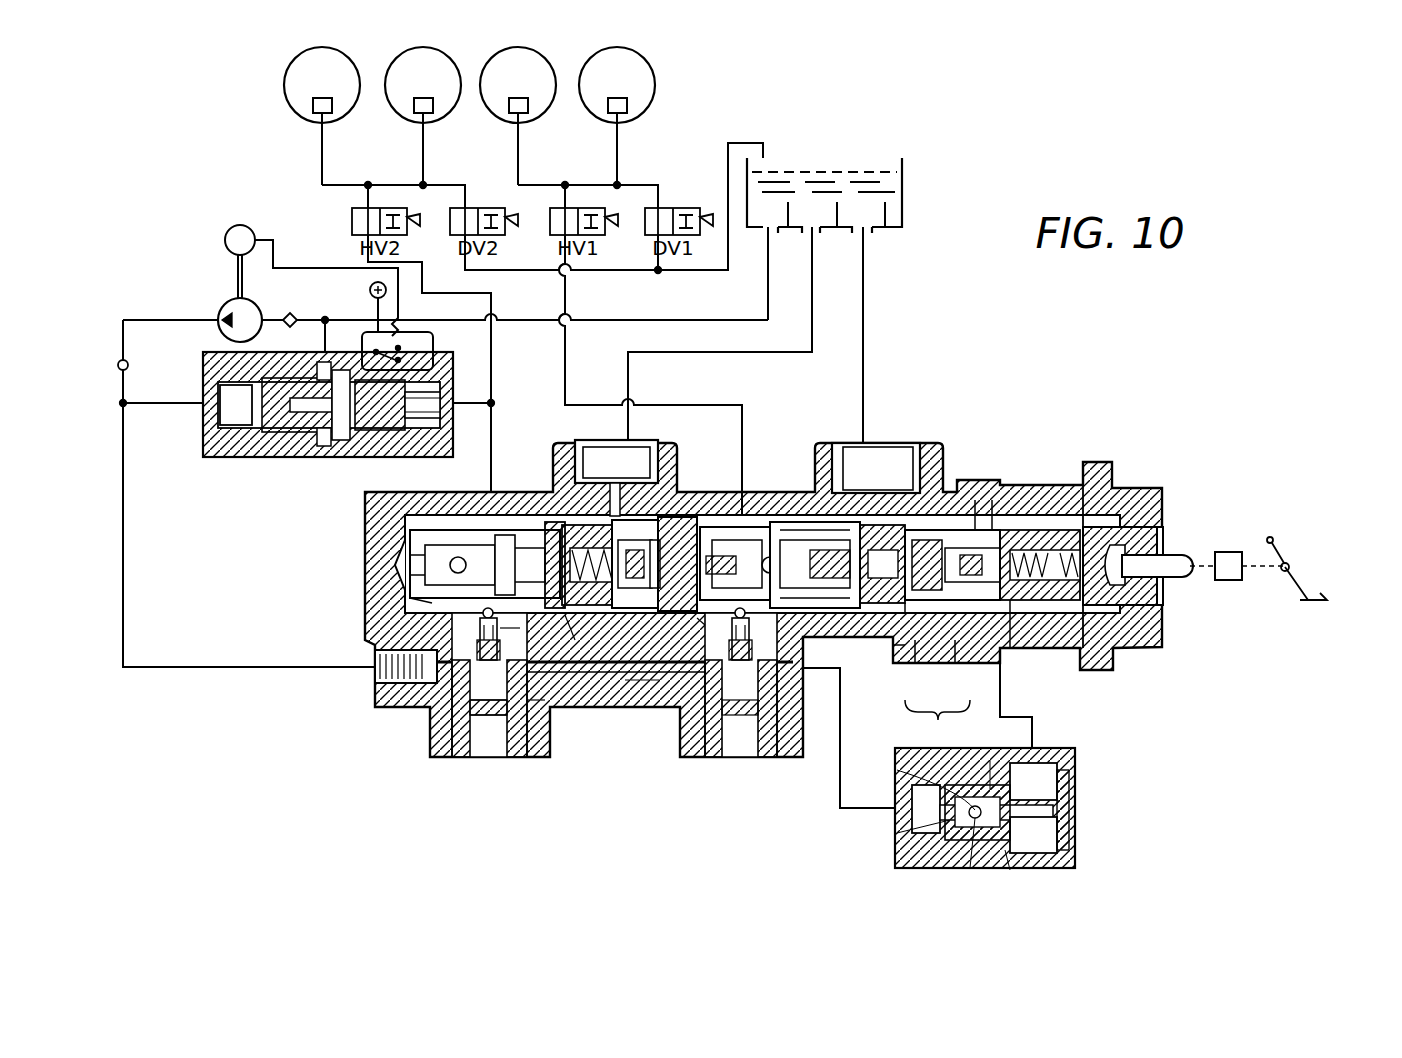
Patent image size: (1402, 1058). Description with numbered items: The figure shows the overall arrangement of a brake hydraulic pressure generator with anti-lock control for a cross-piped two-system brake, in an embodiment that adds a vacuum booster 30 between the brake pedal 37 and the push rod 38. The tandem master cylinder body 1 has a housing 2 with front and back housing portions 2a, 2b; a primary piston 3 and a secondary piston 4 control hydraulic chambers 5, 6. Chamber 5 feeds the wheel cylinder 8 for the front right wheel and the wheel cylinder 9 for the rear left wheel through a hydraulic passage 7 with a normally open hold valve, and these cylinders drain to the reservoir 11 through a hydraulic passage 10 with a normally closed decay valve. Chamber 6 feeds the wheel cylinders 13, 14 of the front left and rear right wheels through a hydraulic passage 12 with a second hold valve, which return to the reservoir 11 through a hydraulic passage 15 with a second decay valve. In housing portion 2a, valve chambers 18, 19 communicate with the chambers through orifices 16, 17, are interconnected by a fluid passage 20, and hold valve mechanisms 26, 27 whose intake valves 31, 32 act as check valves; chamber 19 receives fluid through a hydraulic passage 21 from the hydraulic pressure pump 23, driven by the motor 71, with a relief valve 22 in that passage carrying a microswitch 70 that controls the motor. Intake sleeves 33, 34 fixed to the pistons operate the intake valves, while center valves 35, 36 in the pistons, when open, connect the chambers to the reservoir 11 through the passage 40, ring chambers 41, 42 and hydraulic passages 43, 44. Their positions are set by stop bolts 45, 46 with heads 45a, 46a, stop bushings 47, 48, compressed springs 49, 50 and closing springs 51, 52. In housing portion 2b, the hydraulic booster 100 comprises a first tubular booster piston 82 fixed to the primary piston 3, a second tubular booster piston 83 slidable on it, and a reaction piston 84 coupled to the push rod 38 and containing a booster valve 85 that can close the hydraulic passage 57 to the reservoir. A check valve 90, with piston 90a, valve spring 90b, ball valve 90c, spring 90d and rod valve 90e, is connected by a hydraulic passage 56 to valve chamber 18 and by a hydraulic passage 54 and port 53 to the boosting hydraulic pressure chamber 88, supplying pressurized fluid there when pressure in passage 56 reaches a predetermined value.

The master cylinder body 1 is at (1140, 650).
The housing 2 is at (930, 749).
The front housing portion 2a is at (915, 668).
The back housing portion 2b is at (955, 668).
The primary piston 3 is at (930, 492).
The secondary piston 4 is at (655, 588).
The hydraulic chamber 5 is at (815, 437).
The hydraulic chamber 6 is at (575, 525).
The hydraulic passage 7 is at (567, 350).
The wheel cylinder 8 is at (627, 105).
The wheel cylinder 9 is at (528, 105).
The hydraulic passage 10 is at (660, 190).
The reservoir 11 is at (903, 178).
The hydraulic passage 12 is at (493, 378).
The wheel cylinder 13 is at (332, 105).
The wheel cylinder 14 is at (433, 105).
The hydraulic passage 15 is at (468, 190).
The orifice 16 is at (720, 625).
The orifice 17 is at (478, 620).
The valve chamber 18 is at (752, 622).
The valve chamber 19 is at (512, 690).
The fluid passage 20 is at (630, 680).
The hydraulic passage 21 is at (125, 468).
The relief valve 22 is at (236, 457).
The hydraulic pressure pump 23 is at (226, 302).
The valve mechanism 26 is at (660, 675).
The valve mechanism 27 is at (500, 645).
The vacuum booster 30 is at (1227, 552).
The intake valve 31 is at (770, 712).
The intake valve 32 is at (530, 710).
The intake sleeve 33 is at (798, 522).
The intake sleeve 34 is at (548, 525).
The center valve 35 is at (895, 660).
The center valve 36 is at (630, 608).
The brake pedal 37 is at (1300, 585).
The push rod 38 is at (1180, 550).
The passage 40 is at (680, 517).
The ring chamber 41 is at (876, 468).
The ring chamber 42 is at (645, 478).
The hydraulic passage 43 is at (865, 292).
The hydraulic passage 44 is at (626, 380).
The stop bolt 45 is at (872, 603).
The head 45a is at (750, 527).
The stop bolt 46 is at (518, 633).
The head 46a is at (505, 538).
The stop bushing 47 is at (735, 515).
The stop bushing 48 is at (412, 540).
The spring 49 is at (806, 655).
The spring 50 is at (432, 600).
The spring 51 is at (895, 603).
The spring 52 is at (575, 640).
The port 53 is at (1010, 655).
The hydraulic passage 54 is at (1003, 700).
The hydraulic passage 56 is at (838, 778).
The hydraulic passage 57 is at (995, 500).
The microswitch 70 is at (437, 338).
The motor 71 is at (228, 228).
The first tubular booster piston 82 is at (1062, 530).
The second tubular booster piston 83 is at (977, 500).
The reaction piston 84 is at (1130, 527).
The booster valve 85 is at (1030, 530).
The boosting hydraulic pressure chamber 88 is at (1012, 625).
The check valve 90 is at (1078, 800).
The piston 90a is at (897, 836).
The valve spring 90b is at (970, 868).
The ball valve 90c is at (912, 778).
The spring 90d is at (1010, 870).
The rod valve 90e is at (988, 760).
The hydraulic booster 100 is at (1095, 660).